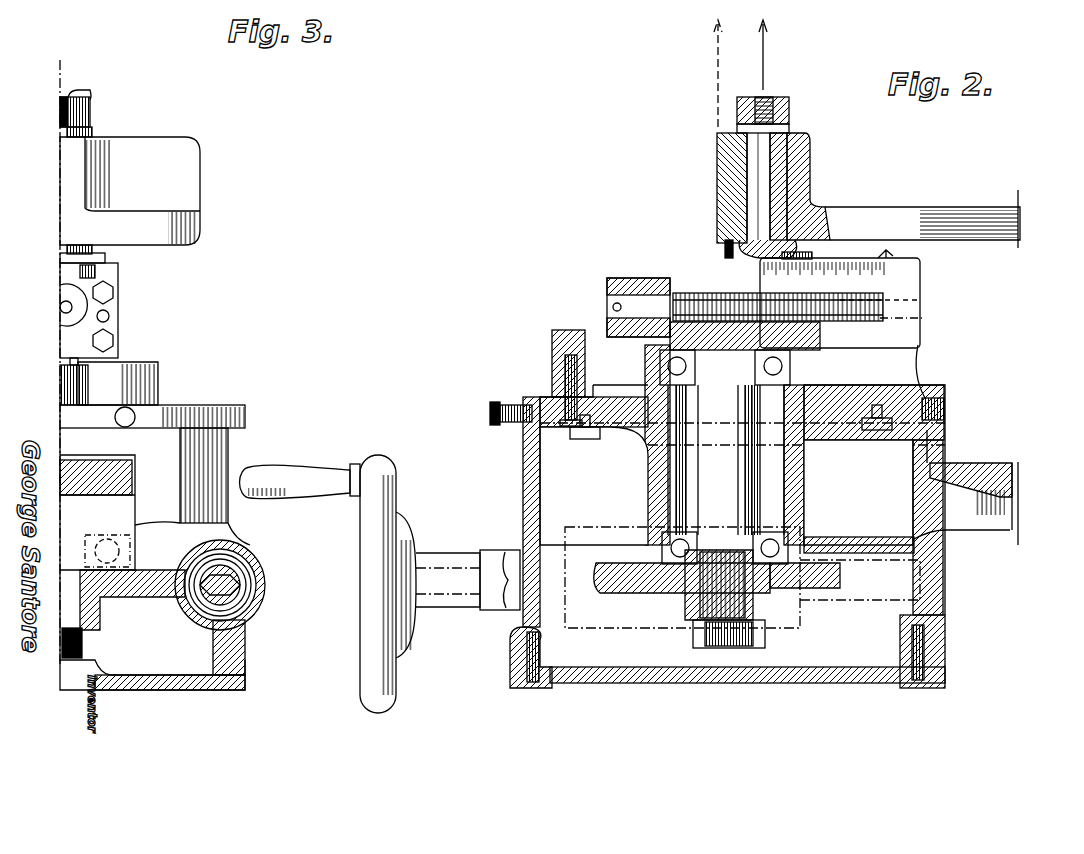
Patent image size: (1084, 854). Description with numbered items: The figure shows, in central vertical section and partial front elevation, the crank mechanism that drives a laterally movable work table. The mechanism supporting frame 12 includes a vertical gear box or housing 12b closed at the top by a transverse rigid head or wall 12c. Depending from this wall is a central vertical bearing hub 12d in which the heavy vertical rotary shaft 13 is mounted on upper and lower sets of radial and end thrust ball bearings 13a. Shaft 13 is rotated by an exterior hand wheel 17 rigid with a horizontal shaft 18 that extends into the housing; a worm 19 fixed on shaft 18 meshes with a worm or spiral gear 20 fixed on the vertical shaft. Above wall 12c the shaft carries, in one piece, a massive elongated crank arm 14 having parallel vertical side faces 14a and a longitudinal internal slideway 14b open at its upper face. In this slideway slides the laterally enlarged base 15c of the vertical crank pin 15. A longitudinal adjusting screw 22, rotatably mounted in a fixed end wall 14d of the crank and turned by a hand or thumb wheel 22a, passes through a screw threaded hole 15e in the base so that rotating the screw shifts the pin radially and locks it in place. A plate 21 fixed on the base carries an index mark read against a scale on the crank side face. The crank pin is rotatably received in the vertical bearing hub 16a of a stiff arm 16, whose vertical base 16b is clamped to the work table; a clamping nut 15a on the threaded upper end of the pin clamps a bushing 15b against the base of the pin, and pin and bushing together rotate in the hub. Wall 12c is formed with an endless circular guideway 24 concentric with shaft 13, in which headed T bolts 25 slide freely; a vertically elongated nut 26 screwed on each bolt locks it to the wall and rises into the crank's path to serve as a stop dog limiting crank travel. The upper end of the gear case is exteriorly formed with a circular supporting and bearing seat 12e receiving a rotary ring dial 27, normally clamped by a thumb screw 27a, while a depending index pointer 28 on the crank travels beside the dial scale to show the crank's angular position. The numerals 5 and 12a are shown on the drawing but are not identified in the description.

In FIG. 2, the pointer 5 is at (882, 249).
In FIG. 3, the mechanism supporting frame 12 is at (95, 470).
In FIG. 2, the mechanism supporting frame 12 is at (973, 528).
In FIG. 3, the housing boss 12a is at (158, 372).
In FIG. 3, the gear box or housing 12b is at (228, 465).
In FIG. 2, the gear box or housing 12b is at (523, 515).
In FIG. 2, the top head or wall 12c is at (615, 397).
In FIG. 2, the vertical bearing hub 12d is at (648, 490).
In FIG. 2, the supporting and bearing seat 12e is at (523, 440).
In FIG. 3, the vertical rotary shaft 13 is at (82, 622).
In FIG. 2, the vertical rotary shaft 13 is at (720, 490).
In FIG. 2, the ball bearings 13a is at (660, 362).
In FIG. 3, the crank arm 14 is at (118, 296).
In FIG. 2, the crank arm 14 is at (910, 296).
In FIG. 3, the vertical side faces 14a is at (118, 275).
In FIG. 3, the slideway 14b is at (60, 258).
In FIG. 2, the slideway 14b is at (922, 320).
In FIG. 3, the end wall 14d is at (112, 318).
In FIG. 2, the end wall 14d is at (660, 290).
In FIG. 3, the crank pin 15 is at (68, 97).
In FIG. 2, the crank pin 15 is at (768, 95).
In FIG. 3, the clamping nut 15a is at (80, 105).
In FIG. 2, the clamping nut 15a is at (790, 112).
In FIG. 3, the bushing 15b is at (92, 130).
In FIG. 2, the bushing 15b is at (745, 182).
In FIG. 3, the base of crank pin 15c is at (80, 272).
In FIG. 2, the base of crank pin 15c is at (725, 255).
In FIG. 2, the screw threaded hole 15e is at (745, 336).
In FIG. 3, the arm 16 is at (200, 238).
In FIG. 2, the arm 16 is at (898, 210).
In FIG. 3, the vertical bearing hub 16a is at (82, 184).
In FIG. 2, the vertical bearing hub 16a is at (730, 155).
In FIG. 3, the vertical base 16b is at (190, 183).
In FIG. 3, the actuating handle or wheel 17 is at (365, 530).
In FIG. 3, the horizontal shaft 18 is at (205, 608).
In FIG. 2, the horizontal shaft 18 is at (508, 565).
In FIG. 3, the worm 19 is at (248, 553).
In FIG. 2, the worm 19 is at (725, 548).
In FIG. 3, the worm or spiral gear 20 is at (170, 600).
In FIG. 2, the worm or spiral gear 20 is at (612, 565).
In FIG. 3, the plate 21 is at (105, 262).
In FIG. 2, the plate 21 is at (800, 256).
In FIG. 3, the adjusting screw 22 is at (62, 302).
In FIG. 2, the adjusting screw 22 is at (710, 293).
In FIG. 3, the hand or thumb wheel 22a is at (70, 320).
In FIG. 2, the hand or thumb wheel 22a is at (607, 286).
In FIG. 2, the circular guideway 24 is at (585, 439).
In FIG. 2, the T bolts or studs 25 is at (565, 375).
In FIG. 3, the nut or stop dog 26 is at (51, 380).
In FIG. 2, the nut or stop dog 26 is at (552, 336).
In FIG. 3, the rotary ring dial 27 is at (235, 405).
In FIG. 2, the rotary ring dial 27 is at (518, 428).
In FIG. 3, the thumb screw 27a is at (130, 412).
In FIG. 2, the thumb screw 27a is at (495, 425).
In FIG. 2, the index pointer 28 is at (925, 362).